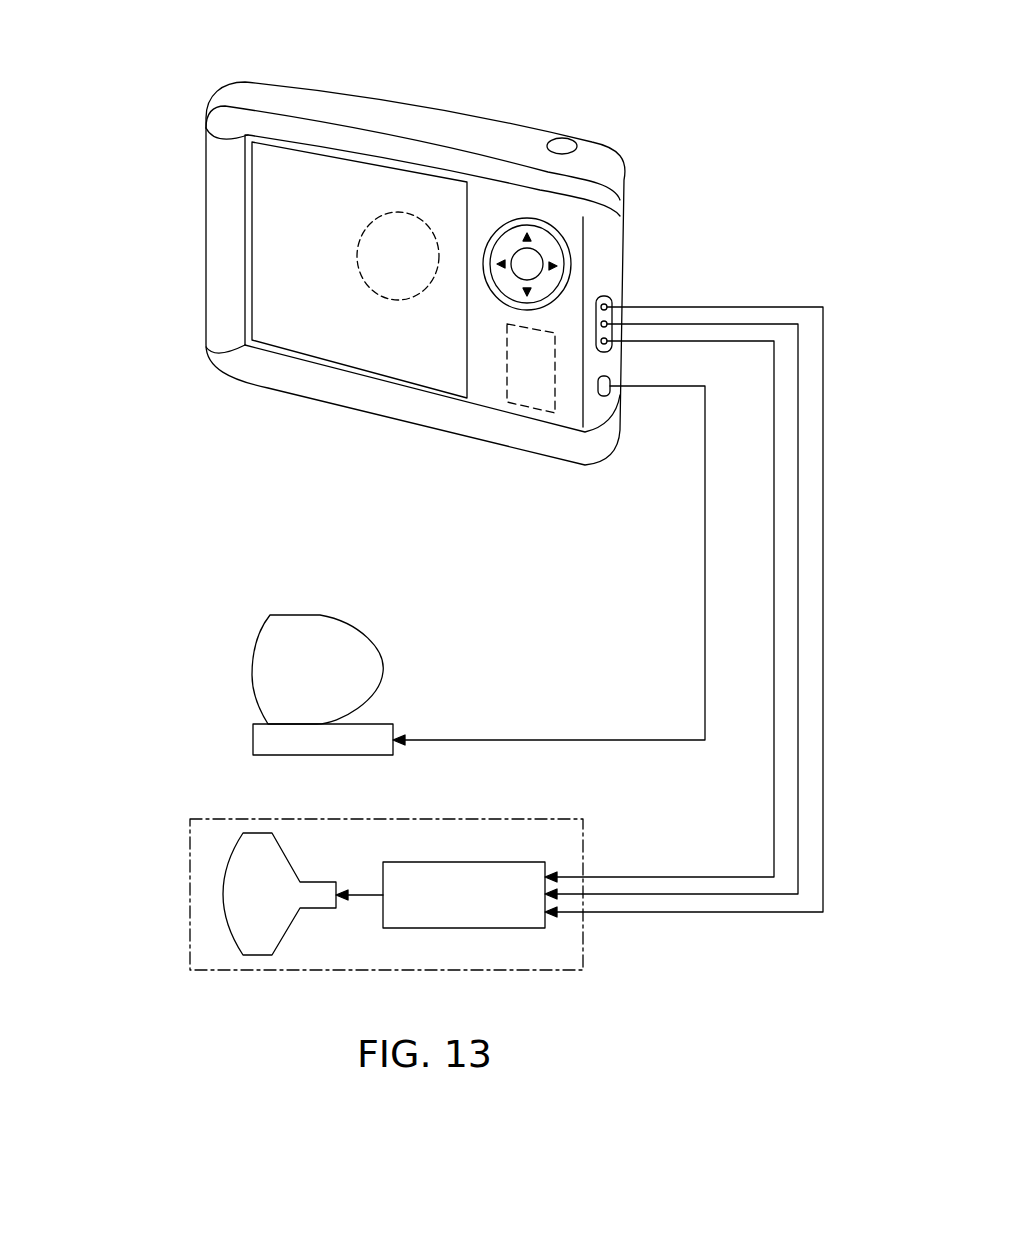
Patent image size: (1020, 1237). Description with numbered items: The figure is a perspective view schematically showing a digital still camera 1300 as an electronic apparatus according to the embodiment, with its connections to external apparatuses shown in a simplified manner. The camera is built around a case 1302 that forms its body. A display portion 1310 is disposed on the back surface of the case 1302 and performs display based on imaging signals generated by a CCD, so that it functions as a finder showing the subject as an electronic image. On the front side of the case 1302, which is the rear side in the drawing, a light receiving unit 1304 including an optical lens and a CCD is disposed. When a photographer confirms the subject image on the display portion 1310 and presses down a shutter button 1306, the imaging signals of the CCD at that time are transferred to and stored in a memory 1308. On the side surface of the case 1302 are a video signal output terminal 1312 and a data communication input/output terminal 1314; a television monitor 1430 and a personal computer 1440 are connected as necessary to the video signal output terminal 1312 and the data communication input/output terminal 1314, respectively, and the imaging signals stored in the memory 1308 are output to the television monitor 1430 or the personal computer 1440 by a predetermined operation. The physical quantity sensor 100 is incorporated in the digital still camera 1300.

The digital still camera 1300 is at (518, 62).
The case 1302 is at (222, 121).
The light receiving unit 1304 is at (399, 213).
The shutter button 1306 is at (560, 146).
The memory 1308 is at (533, 393).
The display portion 1310 is at (332, 338).
The video signal output terminal 1312 is at (609, 300).
The data communication input/output terminal 1314 is at (609, 393).
The physical quantity sensor 100 is at (488, 385).
The personal computer 1440 is at (253, 650).
The television monitor 1430 is at (190, 895).